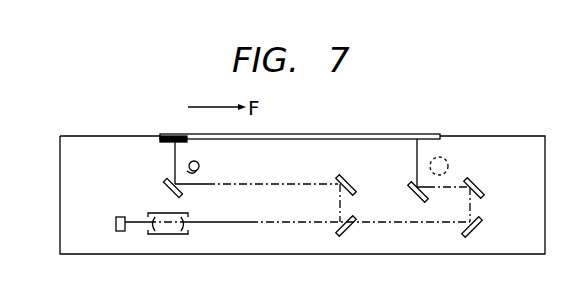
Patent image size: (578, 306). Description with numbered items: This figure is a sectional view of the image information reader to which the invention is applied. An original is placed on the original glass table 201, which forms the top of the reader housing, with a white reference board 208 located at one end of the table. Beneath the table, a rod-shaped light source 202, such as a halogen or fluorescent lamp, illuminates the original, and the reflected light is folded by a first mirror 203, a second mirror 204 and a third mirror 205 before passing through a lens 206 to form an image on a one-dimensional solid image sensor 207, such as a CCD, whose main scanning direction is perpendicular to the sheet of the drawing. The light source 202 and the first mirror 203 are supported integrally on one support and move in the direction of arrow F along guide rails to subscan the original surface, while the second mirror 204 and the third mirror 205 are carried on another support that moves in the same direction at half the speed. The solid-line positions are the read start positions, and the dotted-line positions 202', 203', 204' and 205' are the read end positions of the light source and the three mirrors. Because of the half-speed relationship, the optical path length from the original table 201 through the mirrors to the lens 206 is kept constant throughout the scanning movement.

The original glass table 201 is at (262, 135).
The rod-shaped light source 202 is at (223, 160).
The first mirror 203 is at (146, 189).
The second mirror 204 is at (361, 171).
The third mirror 205 is at (320, 235).
The lens 206 is at (168, 230).
The one-dimensional solid image sensor 207 is at (115, 222).
The white reference board 208 is at (167, 142).
The read end position of rod-shaped light source 202' is at (464, 156).
The read end position of first mirror 203' is at (398, 180).
The read end position of second mirror 204' is at (498, 182).
The read end position of third mirror 205' is at (499, 234).